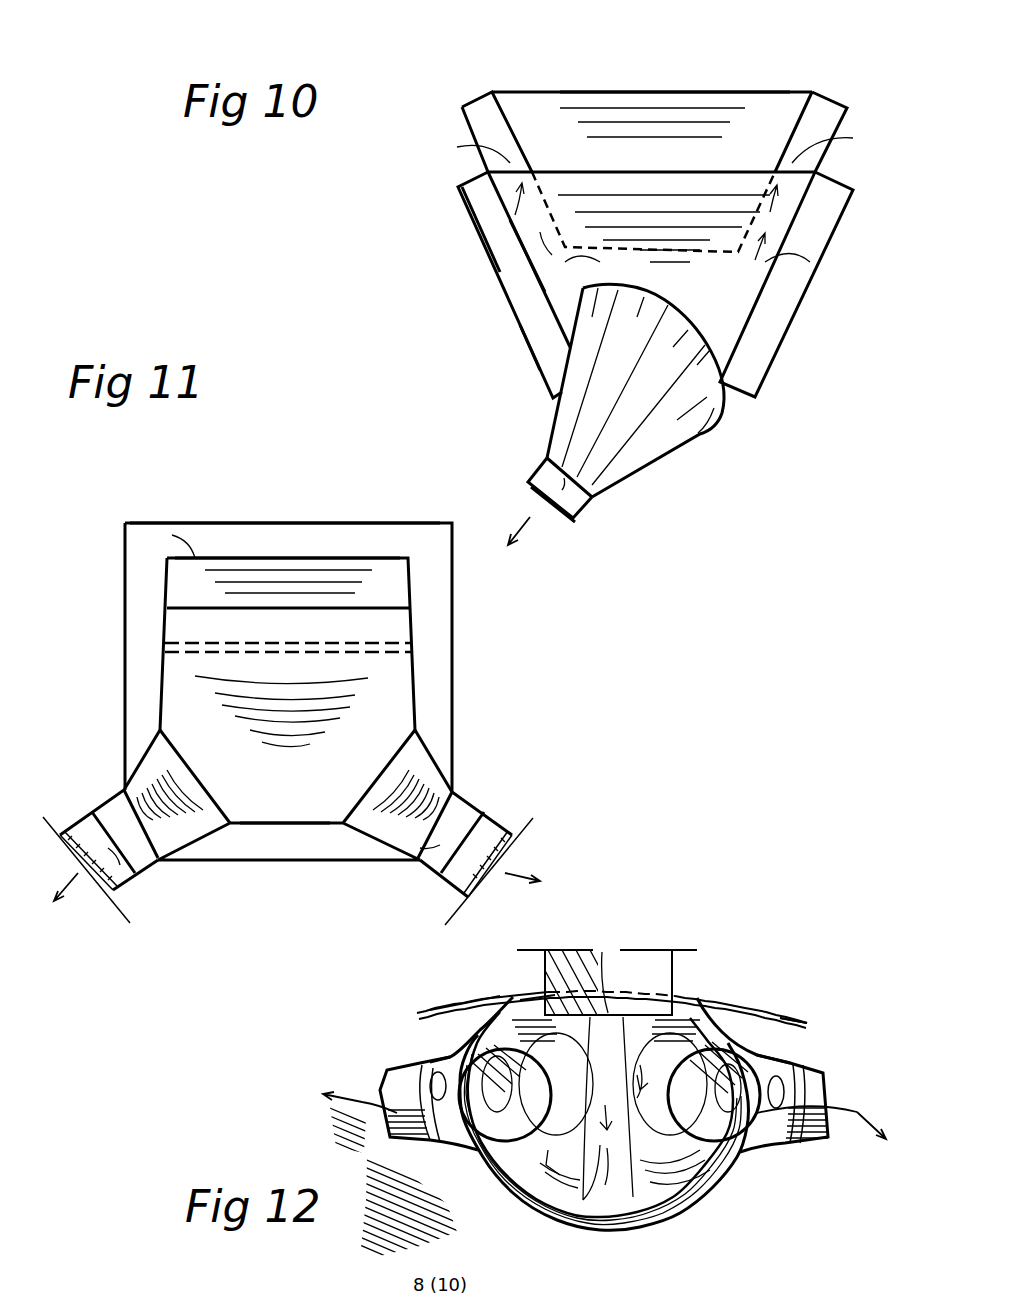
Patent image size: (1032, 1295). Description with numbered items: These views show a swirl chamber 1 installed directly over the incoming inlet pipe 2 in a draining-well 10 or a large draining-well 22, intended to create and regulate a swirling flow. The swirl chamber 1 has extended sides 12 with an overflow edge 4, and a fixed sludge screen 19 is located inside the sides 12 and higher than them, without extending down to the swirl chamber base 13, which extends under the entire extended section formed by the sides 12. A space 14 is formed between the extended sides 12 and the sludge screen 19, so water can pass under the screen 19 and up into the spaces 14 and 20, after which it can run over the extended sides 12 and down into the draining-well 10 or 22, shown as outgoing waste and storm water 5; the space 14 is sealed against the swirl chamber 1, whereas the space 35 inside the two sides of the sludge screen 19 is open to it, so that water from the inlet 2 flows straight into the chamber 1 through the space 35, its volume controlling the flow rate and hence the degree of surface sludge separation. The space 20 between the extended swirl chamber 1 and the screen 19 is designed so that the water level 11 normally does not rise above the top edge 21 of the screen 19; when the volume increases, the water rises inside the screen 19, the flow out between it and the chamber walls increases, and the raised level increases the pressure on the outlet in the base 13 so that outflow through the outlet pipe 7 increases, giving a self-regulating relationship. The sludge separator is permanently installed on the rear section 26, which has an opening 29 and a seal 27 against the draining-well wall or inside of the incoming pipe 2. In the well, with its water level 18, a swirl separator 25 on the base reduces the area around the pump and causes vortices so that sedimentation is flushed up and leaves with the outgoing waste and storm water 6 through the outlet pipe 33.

In FIG. 10, the swirl chamber 1 is at (722, 315).
In FIG. 11, the swirl chamber 1 is at (390, 717).
In FIG. 12, the swirl chamber 1 is at (717, 1138).
In FIG. 12, the inlet pipe 2 is at (672, 970).
In FIG. 10, the overflow edge 4 is at (700, 172).
In FIG. 11, the overflow edge 4 is at (395, 560).
In FIG. 10, the outgoing waste and storm water 5 is at (457, 147).
In FIG. 11, the outgoing waste and storm water 5 is at (135, 567).
In FIG. 10, the outgoing waste and storm water 6 is at (530, 517).
In FIG. 11, the outgoing waste and storm water 6 is at (78, 873).
In FIG. 12, the outgoing waste and storm water 6 is at (362, 1102).
In FIG. 10, the outlet pipe 7 is at (580, 499).
In FIG. 11, the outlet pipe 7 is at (112, 817).
In FIG. 12, the outlet pipe 7 is at (412, 1143).
In FIG. 12, the draining-well 10 is at (772, 983).
In FIG. 11, the swirl chamber water level 11 is at (188, 641).
In FIG. 10, the swirl chamber extended sides 12 is at (528, 252).
In FIG. 11, the swirl chamber base 13 is at (298, 827).
In FIG. 12, the space in a non-extended swirl chamber 14 is at (658, 1160).
In FIG. 12, the water level in draining-well 18 is at (415, 1220).
In FIG. 10, the sludge screen 19 is at (542, 198).
In FIG. 10, the space between extended swirl chamber and sludge screen 20 is at (513, 203).
In FIG. 10, the top edge of sludge screen 21 is at (572, 92).
In FIG. 12, the large draining-well 22 is at (793, 1020).
In FIG. 12, the swirl separator 25 is at (633, 1197).
In FIG. 10, the rear section 26 is at (548, 347).
In FIG. 11, the rear section 26 is at (432, 608).
In FIG. 12, the rear section 26 is at (468, 1013).
In FIG. 10, the seal for rear section 27 is at (480, 238).
In FIG. 11, the seal for rear section 27 is at (245, 523).
In FIG. 12, the seal for rear section 27 is at (513, 995).
In FIG. 12, the opening in rear section 29 is at (537, 998).
In FIG. 11, the outlet pipe from draining-well 33 is at (117, 890).
In FIG. 10, the space between adjacent sides of sludge screen 35 is at (648, 150).